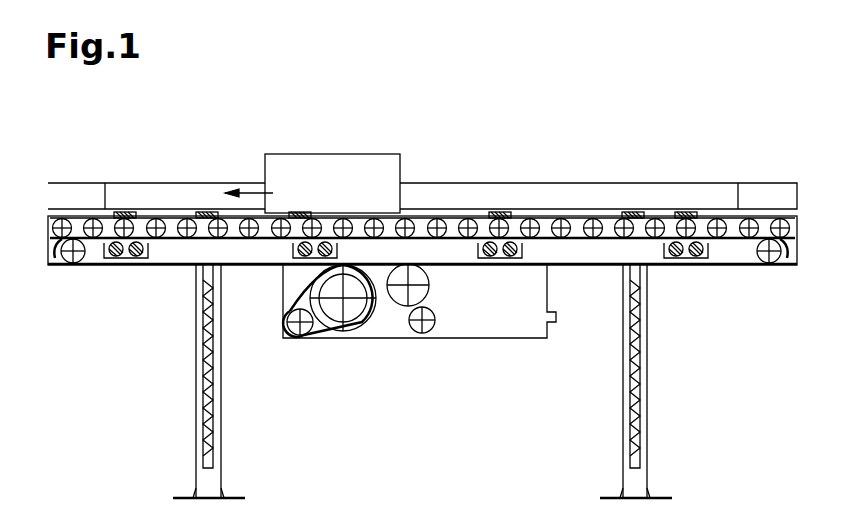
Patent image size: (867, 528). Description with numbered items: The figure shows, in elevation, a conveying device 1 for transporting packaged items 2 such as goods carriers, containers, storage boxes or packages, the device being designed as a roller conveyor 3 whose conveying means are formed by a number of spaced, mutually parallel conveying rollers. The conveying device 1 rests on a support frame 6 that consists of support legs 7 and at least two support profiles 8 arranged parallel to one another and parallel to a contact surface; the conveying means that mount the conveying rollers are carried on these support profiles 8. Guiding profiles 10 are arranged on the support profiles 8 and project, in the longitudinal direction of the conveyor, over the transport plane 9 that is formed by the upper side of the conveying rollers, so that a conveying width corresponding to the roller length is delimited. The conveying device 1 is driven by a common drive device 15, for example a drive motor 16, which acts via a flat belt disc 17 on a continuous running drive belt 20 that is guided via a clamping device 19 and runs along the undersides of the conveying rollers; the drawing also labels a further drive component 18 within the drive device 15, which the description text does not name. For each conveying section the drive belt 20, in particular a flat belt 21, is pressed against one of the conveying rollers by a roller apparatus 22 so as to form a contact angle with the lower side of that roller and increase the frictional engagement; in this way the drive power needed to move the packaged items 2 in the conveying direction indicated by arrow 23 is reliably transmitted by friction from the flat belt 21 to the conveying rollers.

The conveying device 1 is at (539, 116).
The packaged items 2 is at (332, 170).
The roller conveyor 3 is at (580, 113).
The support frame 6 is at (186, 306).
The support legs 7 is at (198, 430).
The support profiles 8 is at (50, 266).
The transport plane 9 is at (574, 218).
The guiding profiles 10 is at (428, 192).
The drive device 15 is at (333, 374).
The drive motor 16 is at (313, 288).
The flat belt disc 17 is at (383, 319).
The drive belt 18 is at (357, 340).
The clamping device 19 is at (445, 327).
The drive belt 20 is at (313, 345).
The flat belt 21 is at (428, 238).
The roller apparatus 22 is at (110, 268).
The arrow 23 is at (250, 190).